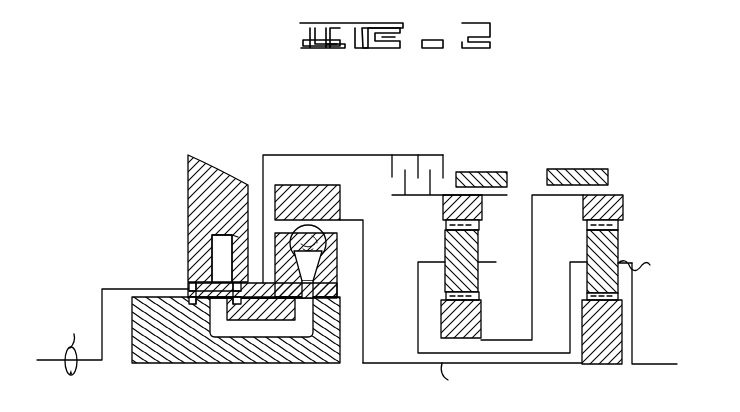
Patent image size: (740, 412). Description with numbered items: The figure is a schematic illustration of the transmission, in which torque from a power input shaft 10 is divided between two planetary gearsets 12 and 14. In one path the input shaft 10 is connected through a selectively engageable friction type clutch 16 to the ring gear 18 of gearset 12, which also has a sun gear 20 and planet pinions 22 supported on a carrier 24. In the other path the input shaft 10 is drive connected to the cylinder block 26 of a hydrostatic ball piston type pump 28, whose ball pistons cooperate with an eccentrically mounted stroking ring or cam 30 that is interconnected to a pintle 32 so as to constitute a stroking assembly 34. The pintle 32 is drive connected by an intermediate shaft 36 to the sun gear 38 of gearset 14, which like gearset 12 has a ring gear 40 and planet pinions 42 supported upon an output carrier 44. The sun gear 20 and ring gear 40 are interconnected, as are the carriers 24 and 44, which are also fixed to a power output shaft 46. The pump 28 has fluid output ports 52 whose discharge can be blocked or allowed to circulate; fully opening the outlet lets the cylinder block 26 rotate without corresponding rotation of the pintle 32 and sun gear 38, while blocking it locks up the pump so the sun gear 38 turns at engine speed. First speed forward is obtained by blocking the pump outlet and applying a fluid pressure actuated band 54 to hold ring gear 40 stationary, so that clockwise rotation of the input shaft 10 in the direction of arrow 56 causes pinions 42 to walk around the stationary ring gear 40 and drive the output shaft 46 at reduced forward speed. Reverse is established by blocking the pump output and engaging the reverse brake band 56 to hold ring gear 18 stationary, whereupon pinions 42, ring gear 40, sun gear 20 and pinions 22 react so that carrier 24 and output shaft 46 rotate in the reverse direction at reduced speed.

The power input shaft 10 is at (43, 360).
The planetary gearset 12 is at (461, 266).
The planetary gearset 14 is at (612, 297).
The friction type clutch 16 is at (415, 151).
The ring gear 18 is at (457, 210).
The sun gear 20 is at (468, 321).
The planet pinions 22 is at (468, 277).
The carrier 24 is at (429, 260).
The cylinder block 26 is at (330, 284).
The hydrostatic ball piston type pump 28 is at (306, 151).
The stroking ring or cam 30 is at (318, 198).
The pintle 32 is at (311, 352).
The stroking assembly 34 is at (214, 366).
The intermediate shaft 36 is at (472, 381).
The sun gear 38 is at (602, 358).
The ring gear 40 is at (590, 210).
The planet pinions 42 is at (608, 250).
The output carrier 44 is at (646, 267).
The power output shaft 46 is at (664, 364).
The fluid output ports 52 is at (300, 330).
The fluid pressure actuated band 54 is at (572, 167).
The reverse brake band 56 is at (78, 344).